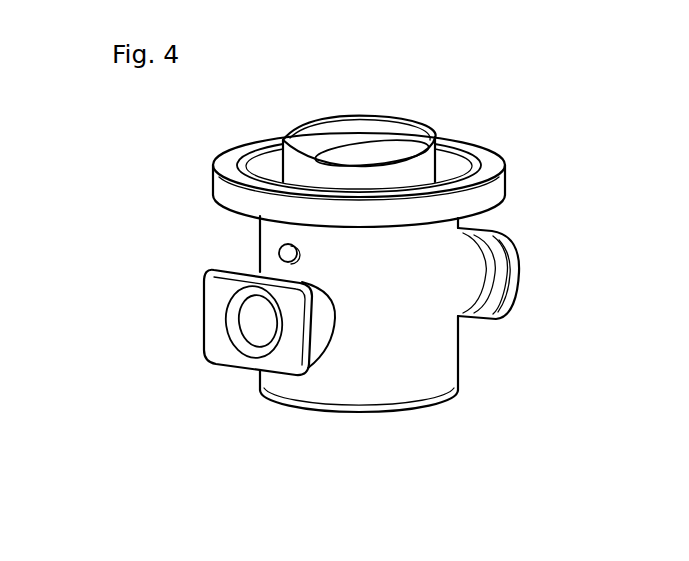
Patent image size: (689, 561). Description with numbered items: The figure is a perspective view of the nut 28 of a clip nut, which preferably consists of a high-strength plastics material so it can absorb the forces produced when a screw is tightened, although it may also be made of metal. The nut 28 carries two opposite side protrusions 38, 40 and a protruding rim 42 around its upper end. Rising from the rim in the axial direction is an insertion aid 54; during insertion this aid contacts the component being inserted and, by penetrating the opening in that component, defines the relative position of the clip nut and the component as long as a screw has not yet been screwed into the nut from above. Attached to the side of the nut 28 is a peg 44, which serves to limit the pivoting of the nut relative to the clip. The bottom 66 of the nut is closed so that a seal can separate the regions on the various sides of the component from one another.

The nut 28 is at (178, 460).
The side protrusion 38 is at (205, 344).
The side protrusion 40 is at (513, 307).
The protruding rim 42 is at (505, 177).
The peg 44 is at (280, 250).
The insertion aid 54 is at (422, 122).
The bottom 66 is at (373, 424).